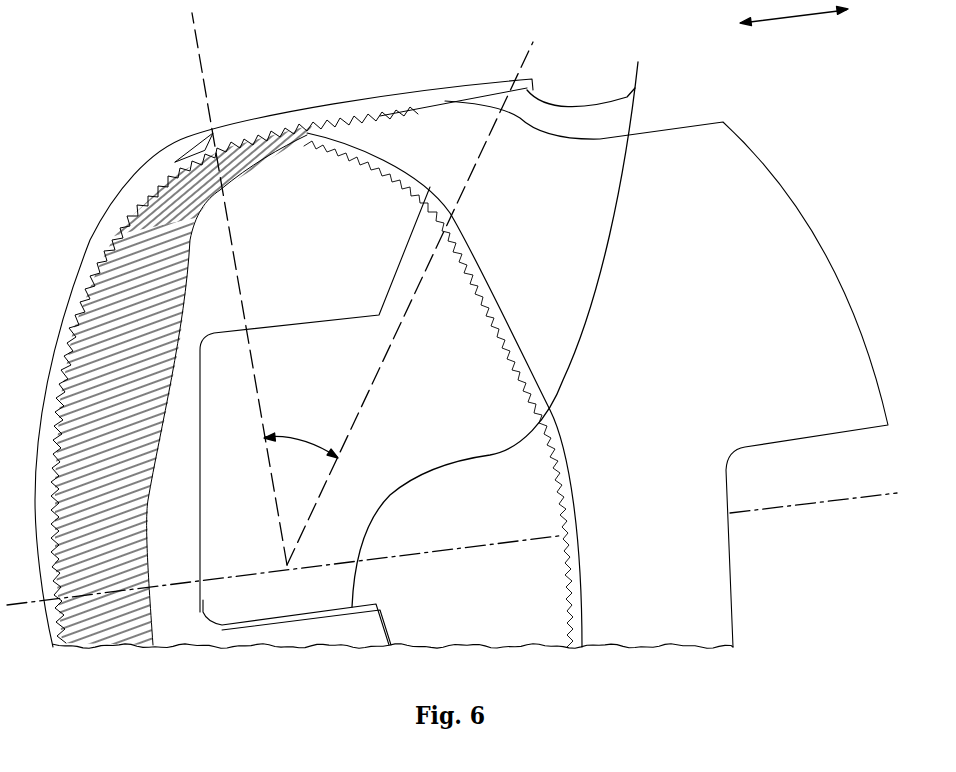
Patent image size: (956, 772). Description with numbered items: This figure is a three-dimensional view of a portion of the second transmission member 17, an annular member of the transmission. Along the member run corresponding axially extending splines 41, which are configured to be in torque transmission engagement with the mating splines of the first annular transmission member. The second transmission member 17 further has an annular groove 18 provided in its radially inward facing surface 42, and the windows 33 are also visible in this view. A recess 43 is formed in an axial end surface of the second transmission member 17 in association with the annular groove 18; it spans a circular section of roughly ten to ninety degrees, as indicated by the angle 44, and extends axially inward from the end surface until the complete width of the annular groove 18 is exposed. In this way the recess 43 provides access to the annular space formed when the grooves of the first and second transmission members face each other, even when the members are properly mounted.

The second transmission member 17 is at (829, 146).
The annular groove 18 is at (103, 300).
The windows 33 is at (505, 318).
The axially extending splines 41 is at (155, 234).
The radially inward facing surface 42 is at (313, 197).
The recess 43 is at (357, 126).
The angle 44 is at (300, 432).